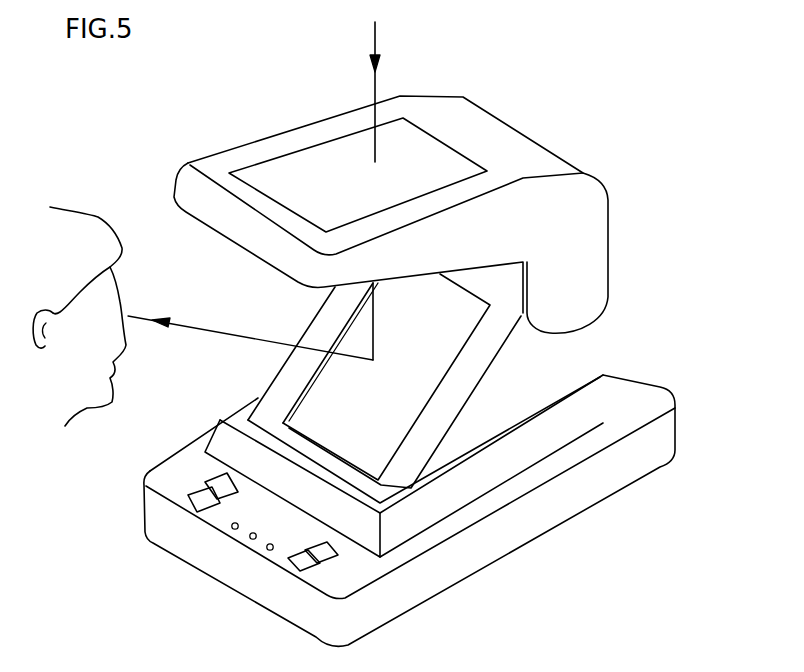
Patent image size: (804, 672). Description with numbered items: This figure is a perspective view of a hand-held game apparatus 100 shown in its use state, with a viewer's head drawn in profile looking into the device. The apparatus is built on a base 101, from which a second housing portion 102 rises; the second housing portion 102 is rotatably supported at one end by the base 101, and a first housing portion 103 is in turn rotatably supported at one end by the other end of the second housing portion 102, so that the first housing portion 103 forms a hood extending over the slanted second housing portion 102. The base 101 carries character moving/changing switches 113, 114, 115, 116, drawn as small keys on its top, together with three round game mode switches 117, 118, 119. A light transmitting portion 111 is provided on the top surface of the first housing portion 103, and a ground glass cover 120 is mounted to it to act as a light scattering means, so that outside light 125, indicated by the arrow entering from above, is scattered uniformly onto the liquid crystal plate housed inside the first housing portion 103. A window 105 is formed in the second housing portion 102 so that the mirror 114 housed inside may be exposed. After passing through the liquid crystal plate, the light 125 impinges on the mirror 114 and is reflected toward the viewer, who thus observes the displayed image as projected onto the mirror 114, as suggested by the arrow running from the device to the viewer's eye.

The film viewer apparatus 100 is at (510, 110).
The base 101 is at (566, 513).
The second housing portion 102 is at (538, 354).
The first housing portion 103 is at (606, 216).
The window 105 is at (334, 334).
The light transmitting portion 111 is at (299, 153).
The character moving/changing switch 113 is at (208, 481).
The mirror 114 is at (308, 403).
The character moving/changing switch 115 is at (343, 556).
The character moving/changing switch 116 is at (322, 567).
The game mode switch 117 is at (230, 530).
The game mode switch 118 is at (250, 540).
The game mode switch 119 is at (268, 552).
The ground glass cover 120 is at (260, 177).
The light 125 is at (378, 42).